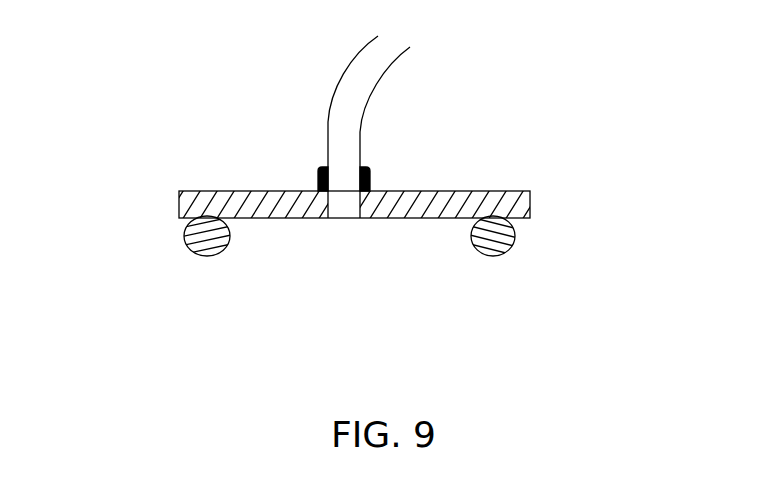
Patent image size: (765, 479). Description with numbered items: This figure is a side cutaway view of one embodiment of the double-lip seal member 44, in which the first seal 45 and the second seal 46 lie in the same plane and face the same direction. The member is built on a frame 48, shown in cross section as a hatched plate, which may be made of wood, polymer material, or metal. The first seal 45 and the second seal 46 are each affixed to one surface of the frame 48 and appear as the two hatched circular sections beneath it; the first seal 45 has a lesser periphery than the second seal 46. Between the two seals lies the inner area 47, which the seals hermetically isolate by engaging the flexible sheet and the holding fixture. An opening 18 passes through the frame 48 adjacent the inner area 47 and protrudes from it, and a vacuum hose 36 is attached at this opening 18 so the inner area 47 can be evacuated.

The opening 18 is at (371, 177).
The vacuum hose 36 is at (371, 90).
The double-lip seal member 44 is at (517, 176).
The first seal 45 is at (511, 246).
The second seal 46 is at (186, 249).
The inner area 47 is at (275, 240).
The frame 48 is at (196, 210).